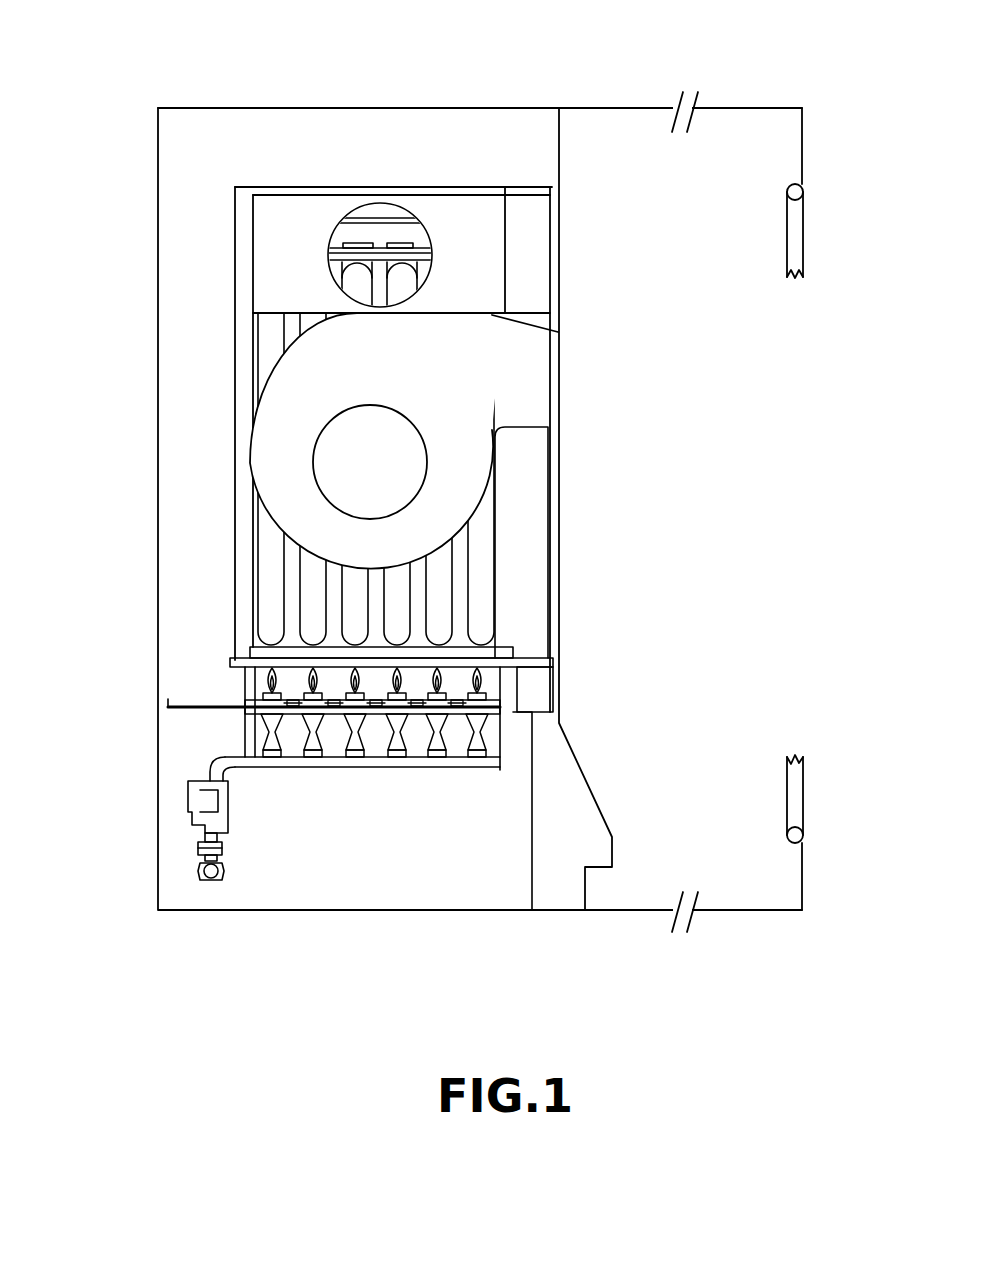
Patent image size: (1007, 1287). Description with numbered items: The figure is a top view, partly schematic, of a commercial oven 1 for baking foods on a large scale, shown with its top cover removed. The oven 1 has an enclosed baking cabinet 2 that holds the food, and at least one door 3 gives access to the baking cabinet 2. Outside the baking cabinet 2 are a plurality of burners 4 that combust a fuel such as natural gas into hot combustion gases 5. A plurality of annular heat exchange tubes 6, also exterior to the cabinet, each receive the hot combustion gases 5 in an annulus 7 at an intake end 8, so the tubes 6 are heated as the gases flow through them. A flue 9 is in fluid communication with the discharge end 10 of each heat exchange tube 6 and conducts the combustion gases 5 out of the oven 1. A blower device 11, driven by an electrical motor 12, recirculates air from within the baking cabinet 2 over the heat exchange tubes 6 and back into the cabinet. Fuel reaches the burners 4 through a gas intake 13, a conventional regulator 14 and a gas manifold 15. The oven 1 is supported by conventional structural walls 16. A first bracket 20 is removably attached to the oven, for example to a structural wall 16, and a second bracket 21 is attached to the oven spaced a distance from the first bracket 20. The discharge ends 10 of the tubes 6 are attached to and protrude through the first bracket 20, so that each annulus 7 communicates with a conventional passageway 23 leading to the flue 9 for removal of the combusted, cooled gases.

The oven 1 is at (370, 94).
The baking cabinet 2 is at (745, 102).
The door 3 is at (803, 232).
The burners 4 is at (345, 725).
The hot combustion gases 5 is at (300, 714).
The heat exchange tubes 6 is at (268, 565).
The annulus 7 is at (252, 680).
The intake end 8 is at (395, 688).
The flue 9 is at (424, 240).
The discharge end 10 is at (340, 262).
The blower device 11 is at (530, 368).
The electrical motor 12 is at (405, 452).
The gas intake 13 is at (222, 868).
The regulator 14 is at (186, 793).
The gas manifold 15 is at (477, 770).
The structural walls 16 is at (513, 108).
The first bracket 20 is at (336, 255).
The second bracket 21 is at (520, 660).
The passageway 23 is at (385, 232).